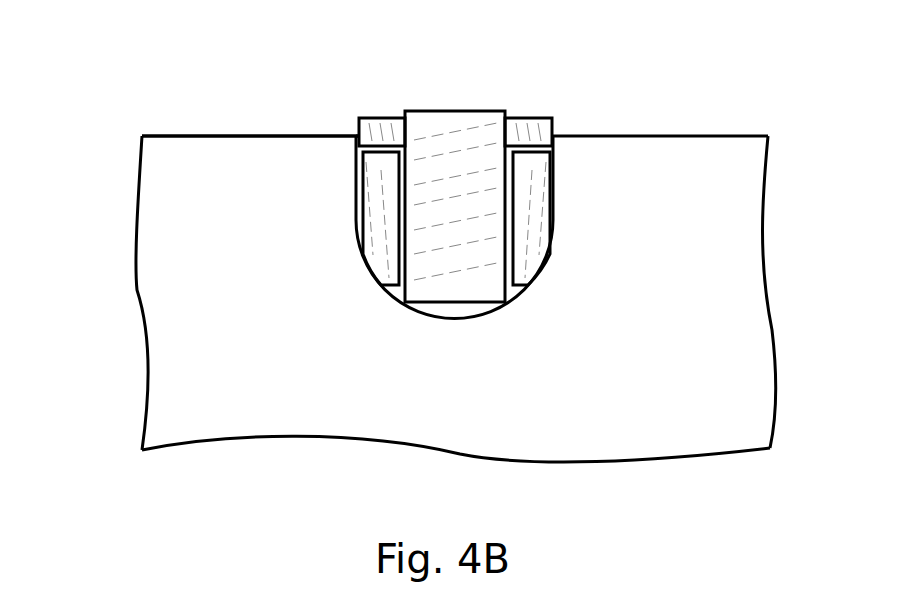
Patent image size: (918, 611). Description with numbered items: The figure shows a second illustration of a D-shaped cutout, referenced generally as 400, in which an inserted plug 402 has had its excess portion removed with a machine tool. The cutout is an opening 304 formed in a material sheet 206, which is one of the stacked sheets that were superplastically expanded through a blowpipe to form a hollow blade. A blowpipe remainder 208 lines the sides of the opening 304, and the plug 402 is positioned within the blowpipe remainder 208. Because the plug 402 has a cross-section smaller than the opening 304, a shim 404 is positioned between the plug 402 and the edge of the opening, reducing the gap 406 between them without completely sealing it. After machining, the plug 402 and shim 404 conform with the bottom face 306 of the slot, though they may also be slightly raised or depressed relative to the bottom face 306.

The semiconductor structure 400 is at (90, 69).
The material sheet 206 is at (727, 210).
The bottom face of the slot 306 is at (238, 128).
The opening 304 is at (503, 302).
The blowpipe remainder 208 is at (545, 185).
The shim 404 is at (384, 117).
The plug 402 is at (453, 110).
The gap 406 is at (357, 133).